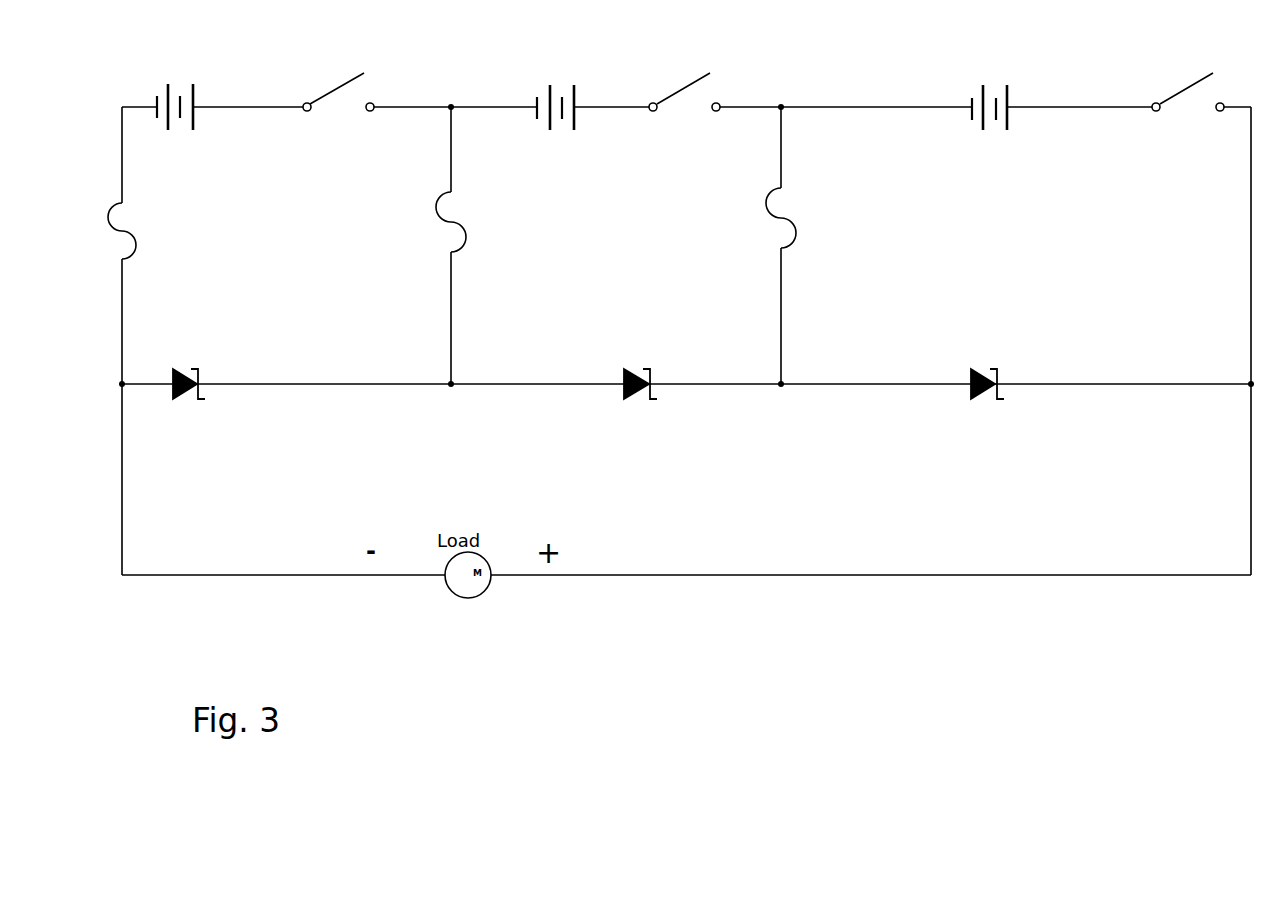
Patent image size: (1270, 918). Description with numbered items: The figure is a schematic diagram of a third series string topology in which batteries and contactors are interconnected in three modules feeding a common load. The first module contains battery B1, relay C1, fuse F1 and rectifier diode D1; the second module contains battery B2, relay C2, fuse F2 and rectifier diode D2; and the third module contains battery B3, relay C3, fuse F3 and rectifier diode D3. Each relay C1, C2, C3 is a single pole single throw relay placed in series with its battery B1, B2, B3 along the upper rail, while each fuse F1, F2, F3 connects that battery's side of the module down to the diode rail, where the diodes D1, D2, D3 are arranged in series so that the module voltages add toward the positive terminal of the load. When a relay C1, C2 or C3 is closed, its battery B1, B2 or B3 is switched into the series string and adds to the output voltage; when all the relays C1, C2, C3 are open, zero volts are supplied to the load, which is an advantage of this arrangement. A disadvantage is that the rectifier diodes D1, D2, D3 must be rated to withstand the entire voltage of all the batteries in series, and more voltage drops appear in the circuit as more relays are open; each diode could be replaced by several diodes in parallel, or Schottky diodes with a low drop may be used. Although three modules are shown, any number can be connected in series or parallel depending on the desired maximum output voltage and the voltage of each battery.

The battery B1 is at (172, 87).
The battery B2 is at (555, 89).
The battery B3 is at (986, 89).
The relay C1 is at (338, 75).
The relay C2 is at (684, 79).
The relay C3 is at (1188, 81).
The fuse F1 is at (96, 231).
The fuse F2 is at (427, 222).
The fuse F3 is at (756, 218).
The rectifier diode D1 is at (189, 370).
The rectifier diode D2 is at (640, 370).
The rectifier diode D3 is at (987, 370).